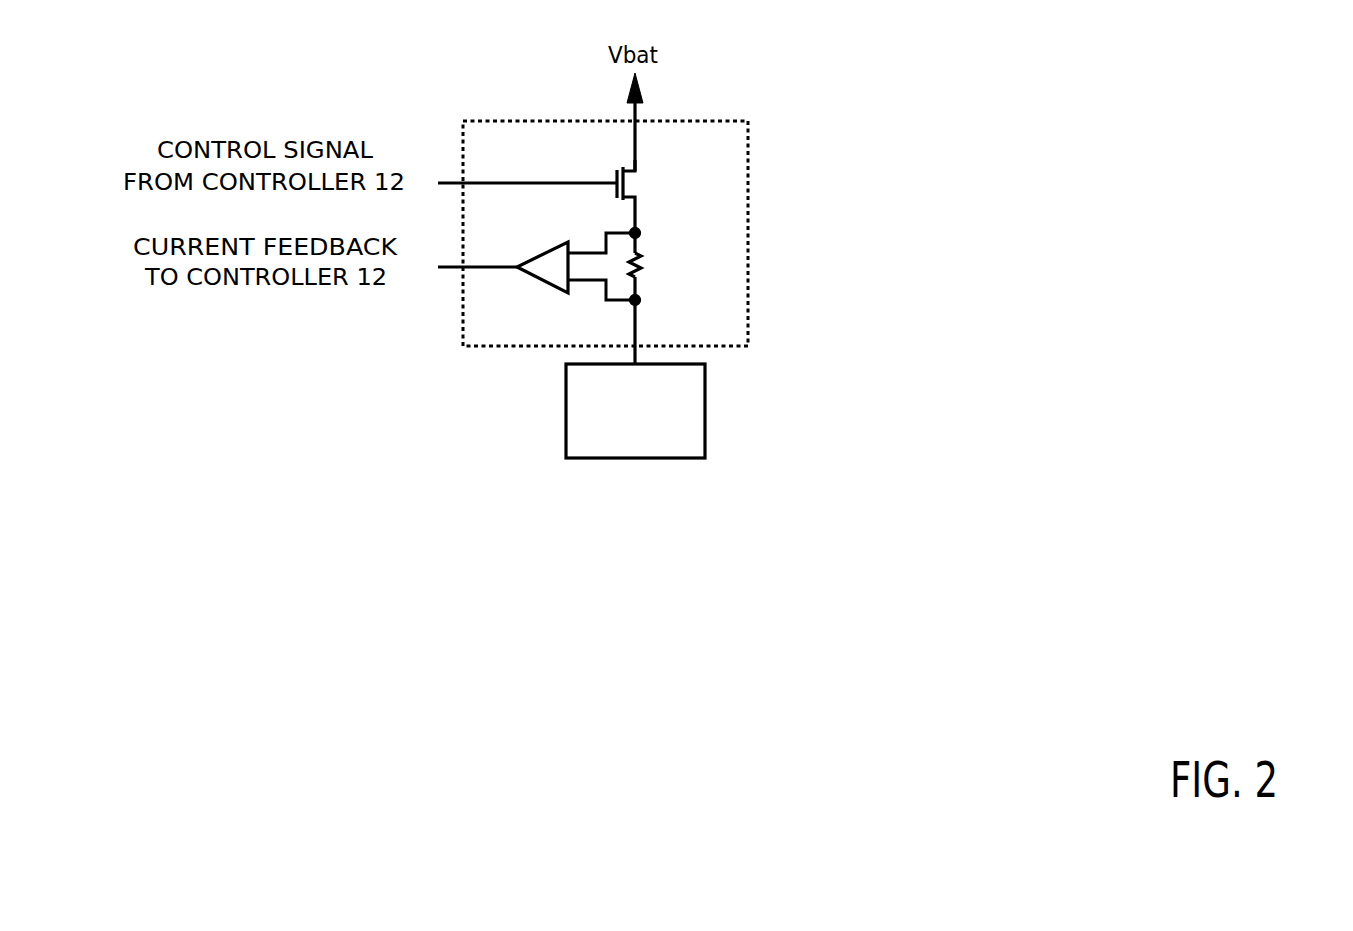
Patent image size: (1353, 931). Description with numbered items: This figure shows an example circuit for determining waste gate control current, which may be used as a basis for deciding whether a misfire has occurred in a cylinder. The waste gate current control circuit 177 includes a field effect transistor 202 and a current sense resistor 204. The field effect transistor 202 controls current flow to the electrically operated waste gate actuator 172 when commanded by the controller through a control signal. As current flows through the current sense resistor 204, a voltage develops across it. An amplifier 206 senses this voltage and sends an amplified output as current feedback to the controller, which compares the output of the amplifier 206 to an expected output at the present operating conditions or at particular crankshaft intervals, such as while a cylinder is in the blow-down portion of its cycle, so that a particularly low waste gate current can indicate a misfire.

The waste gate current control circuit 177 is at (555, 120).
The field effect transistor 202 is at (617, 177).
The current sense resistor 204 is at (640, 257).
The amplifier 206 is at (548, 285).
The electrically operated waste gate actuator 172 is at (635, 411).